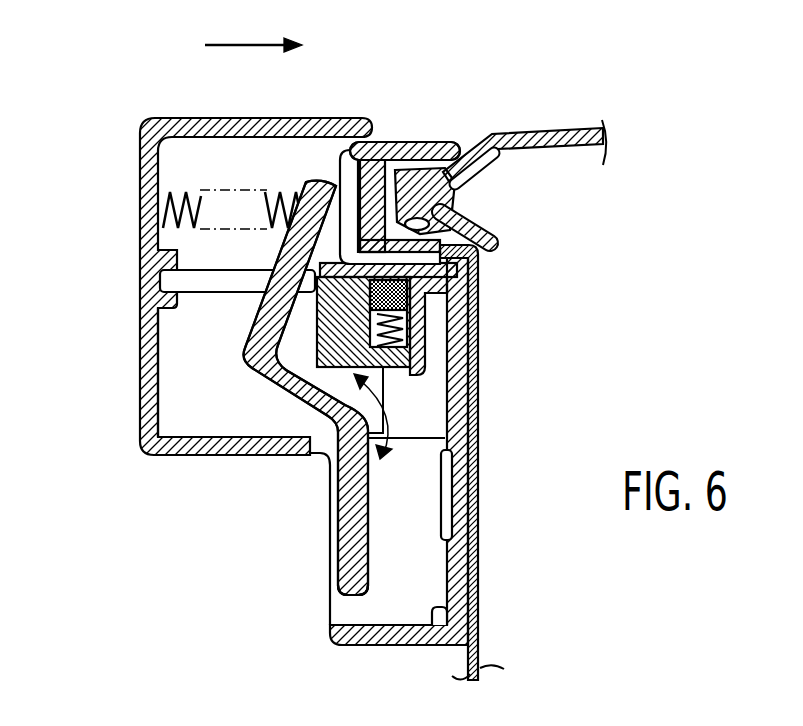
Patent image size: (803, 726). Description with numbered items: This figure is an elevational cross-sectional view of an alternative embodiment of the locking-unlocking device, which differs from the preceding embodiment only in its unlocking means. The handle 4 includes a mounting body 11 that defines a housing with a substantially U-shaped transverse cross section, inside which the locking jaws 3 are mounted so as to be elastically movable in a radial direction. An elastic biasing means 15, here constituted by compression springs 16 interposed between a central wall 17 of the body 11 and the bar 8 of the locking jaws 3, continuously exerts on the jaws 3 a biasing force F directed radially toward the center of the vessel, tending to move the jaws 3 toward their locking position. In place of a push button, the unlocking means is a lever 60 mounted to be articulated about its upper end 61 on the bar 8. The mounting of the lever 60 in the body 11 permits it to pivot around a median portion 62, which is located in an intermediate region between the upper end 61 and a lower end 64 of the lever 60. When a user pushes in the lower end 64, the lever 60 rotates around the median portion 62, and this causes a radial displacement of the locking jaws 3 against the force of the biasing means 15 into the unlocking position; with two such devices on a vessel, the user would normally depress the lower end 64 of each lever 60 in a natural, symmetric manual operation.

The locking jaws 3 is at (438, 150).
The handle 4 is at (161, 80).
The bar 8 is at (348, 196).
The mounting body 11 is at (140, 132).
The elastic biasing means 15 is at (165, 190).
The compression springs 16 is at (263, 200).
The central wall 17 is at (155, 338).
The lever 60 is at (345, 483).
The upper end 61 is at (333, 180).
The median portion 62 is at (340, 453).
The lower end 64 is at (352, 577).